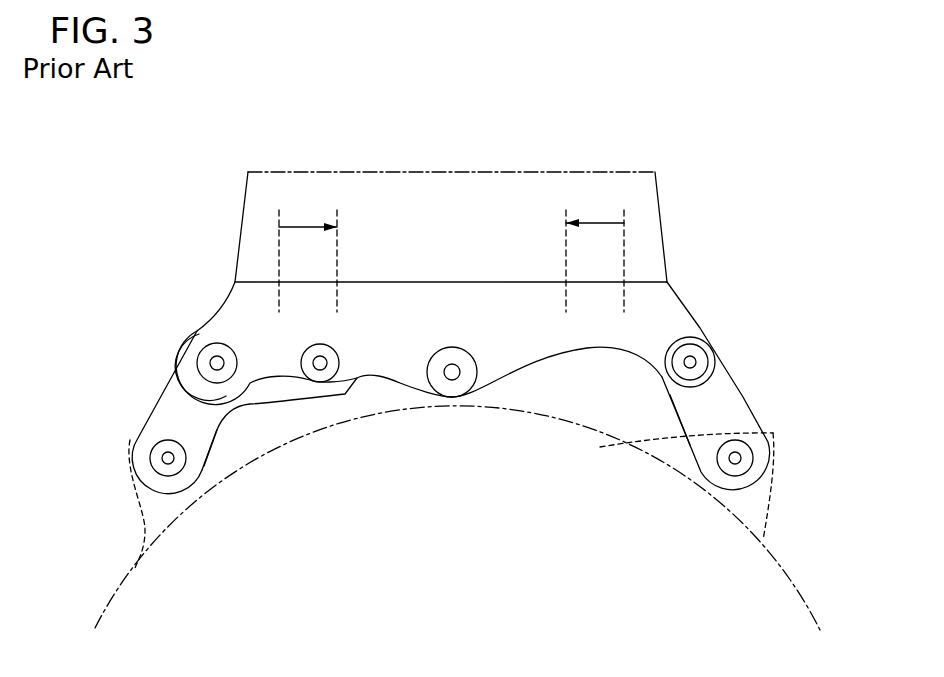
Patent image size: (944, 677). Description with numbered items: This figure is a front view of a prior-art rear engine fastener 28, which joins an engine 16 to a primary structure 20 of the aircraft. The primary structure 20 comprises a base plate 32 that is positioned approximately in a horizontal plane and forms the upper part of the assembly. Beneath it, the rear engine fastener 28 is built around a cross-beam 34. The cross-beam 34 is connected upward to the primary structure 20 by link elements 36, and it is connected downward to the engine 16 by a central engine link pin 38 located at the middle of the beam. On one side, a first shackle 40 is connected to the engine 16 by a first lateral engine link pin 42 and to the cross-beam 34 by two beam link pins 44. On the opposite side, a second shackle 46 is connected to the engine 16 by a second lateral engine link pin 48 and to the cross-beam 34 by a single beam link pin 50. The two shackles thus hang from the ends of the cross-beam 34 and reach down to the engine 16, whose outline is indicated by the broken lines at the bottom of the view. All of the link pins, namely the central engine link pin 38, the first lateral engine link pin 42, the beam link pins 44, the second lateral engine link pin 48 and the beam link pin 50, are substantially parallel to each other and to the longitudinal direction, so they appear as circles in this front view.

The engine 16 is at (791, 572).
The primary structure 20 is at (510, 178).
The rear engine fastener 28 is at (165, 243).
The base plate 32 is at (305, 284).
The cross-beam 34 is at (393, 330).
The link elements 36 is at (278, 246).
The central engine link pin 38 is at (459, 381).
The first shackle 40 is at (229, 424).
The first lateral engine link pin 42 is at (149, 467).
The beam link pins 44 is at (230, 378).
The second shackle 46 is at (749, 388).
The second lateral engine link pin 48 is at (749, 451).
The beam link pin 50 is at (699, 347).